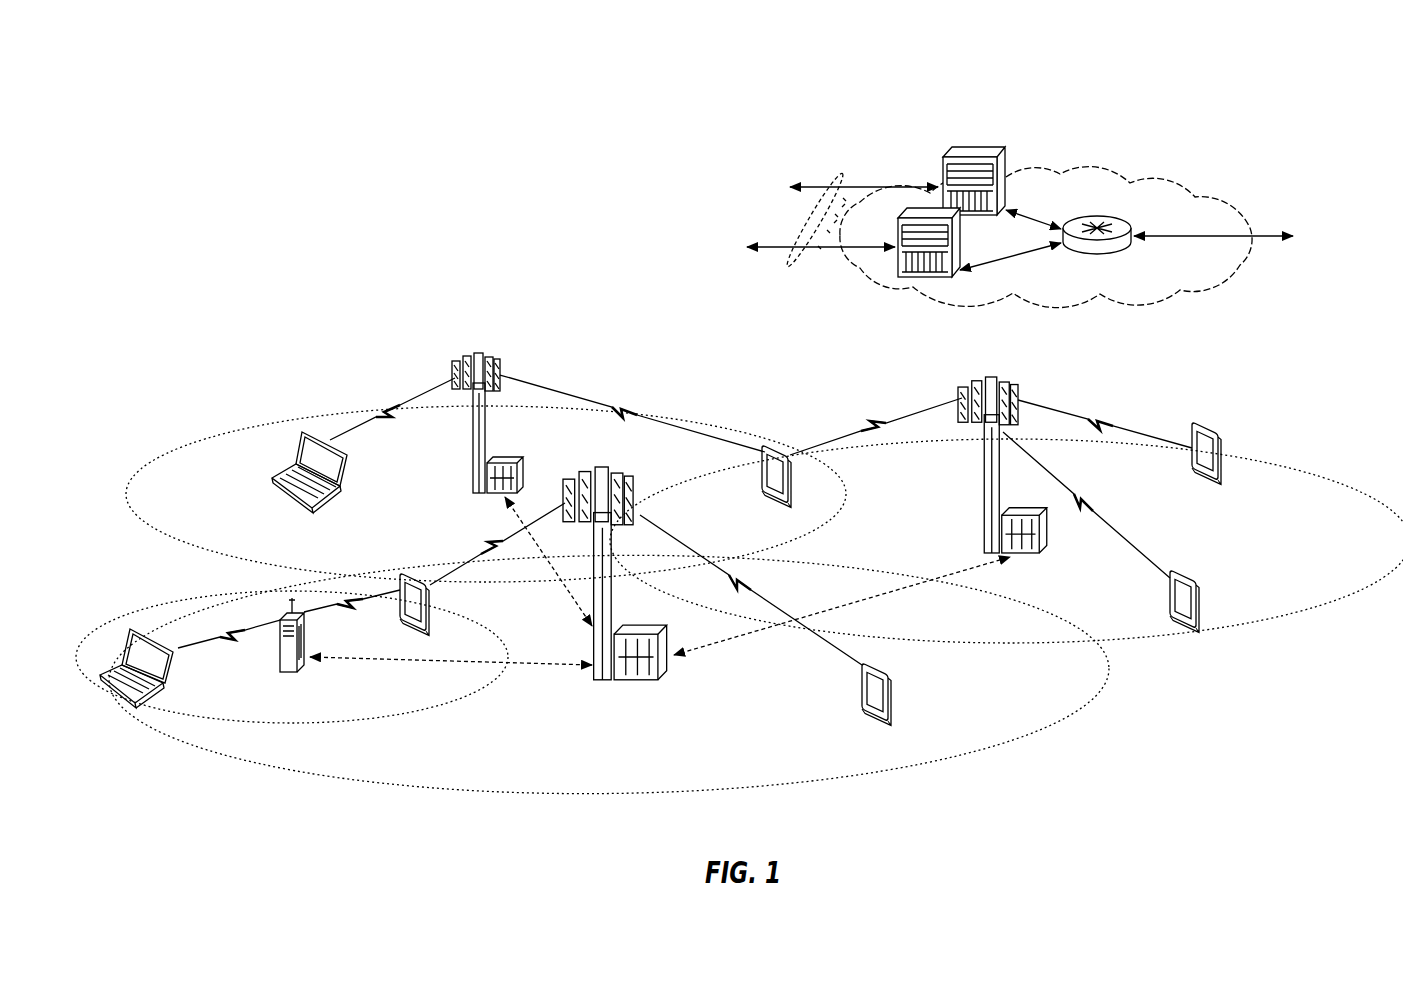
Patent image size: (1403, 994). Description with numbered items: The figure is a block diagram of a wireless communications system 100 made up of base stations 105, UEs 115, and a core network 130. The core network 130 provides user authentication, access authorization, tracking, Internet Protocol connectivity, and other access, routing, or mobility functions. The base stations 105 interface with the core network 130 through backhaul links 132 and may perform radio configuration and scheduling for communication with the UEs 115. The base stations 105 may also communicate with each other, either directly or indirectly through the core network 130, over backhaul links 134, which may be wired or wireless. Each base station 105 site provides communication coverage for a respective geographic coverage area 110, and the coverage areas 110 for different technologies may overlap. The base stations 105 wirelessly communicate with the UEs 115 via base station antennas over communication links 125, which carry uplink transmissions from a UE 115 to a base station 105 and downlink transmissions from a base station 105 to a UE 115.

The wireless communications system 100 is at (1292, 113).
The base station 105 is at (474, 462).
The geographic coverage area 110 is at (182, 545).
The UE 115 is at (328, 496).
The communication link 125 is at (388, 404).
The core network 130 is at (1132, 293).
The backhaul link 132 is at (798, 262).
The backhaul link 134 is at (553, 597).